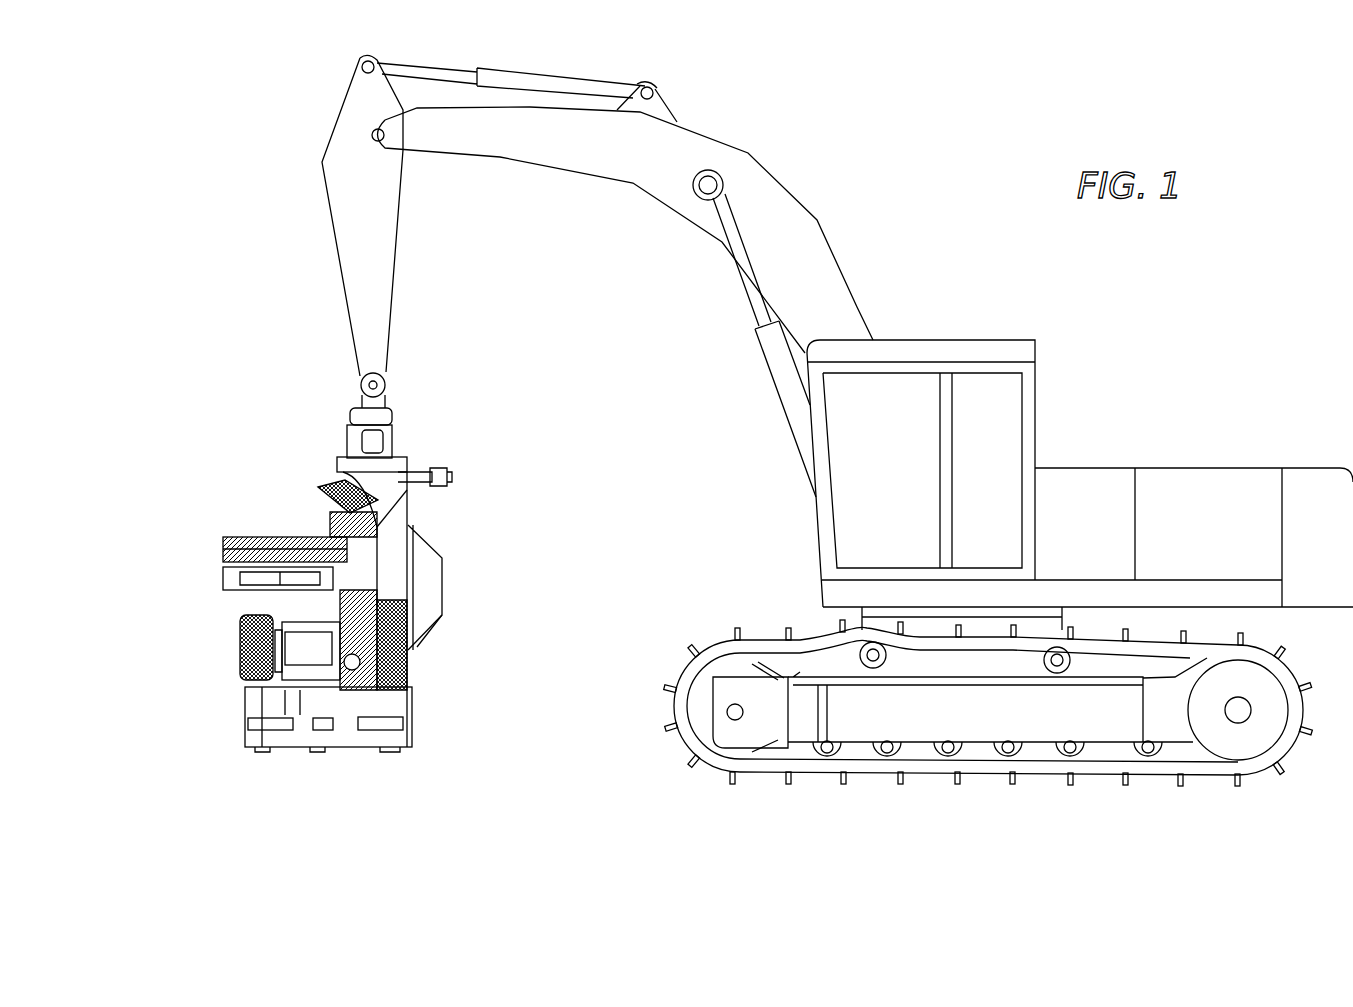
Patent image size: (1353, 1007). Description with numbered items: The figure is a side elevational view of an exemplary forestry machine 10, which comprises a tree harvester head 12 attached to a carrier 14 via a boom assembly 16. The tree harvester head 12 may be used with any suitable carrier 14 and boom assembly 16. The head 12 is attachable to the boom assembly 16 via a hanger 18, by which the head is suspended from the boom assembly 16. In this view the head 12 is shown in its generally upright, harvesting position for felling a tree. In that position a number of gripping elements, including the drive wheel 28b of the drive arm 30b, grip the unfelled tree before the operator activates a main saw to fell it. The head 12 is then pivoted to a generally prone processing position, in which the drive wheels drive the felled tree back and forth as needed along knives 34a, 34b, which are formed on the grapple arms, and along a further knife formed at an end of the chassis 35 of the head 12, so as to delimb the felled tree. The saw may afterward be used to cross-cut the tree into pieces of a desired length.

The forestry machine 10 is at (256, 372).
The tree harvester head 12 is at (276, 508).
The carrier 14 is at (1148, 467).
The boom assembly 16 is at (830, 233).
The hanger 18 is at (402, 458).
The drive wheel 28b is at (238, 650).
The drive arm 30b is at (298, 627).
The knife 34a is at (223, 578).
The knife 34b is at (233, 545).
The chassis 35 is at (417, 667).